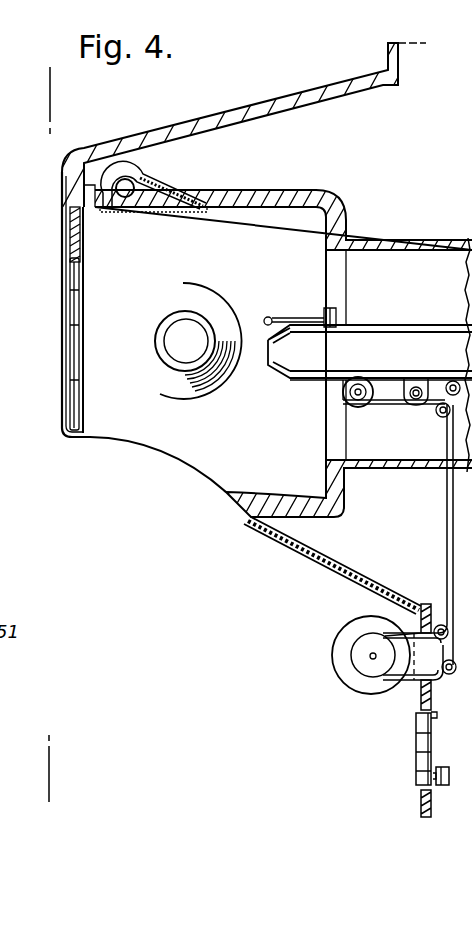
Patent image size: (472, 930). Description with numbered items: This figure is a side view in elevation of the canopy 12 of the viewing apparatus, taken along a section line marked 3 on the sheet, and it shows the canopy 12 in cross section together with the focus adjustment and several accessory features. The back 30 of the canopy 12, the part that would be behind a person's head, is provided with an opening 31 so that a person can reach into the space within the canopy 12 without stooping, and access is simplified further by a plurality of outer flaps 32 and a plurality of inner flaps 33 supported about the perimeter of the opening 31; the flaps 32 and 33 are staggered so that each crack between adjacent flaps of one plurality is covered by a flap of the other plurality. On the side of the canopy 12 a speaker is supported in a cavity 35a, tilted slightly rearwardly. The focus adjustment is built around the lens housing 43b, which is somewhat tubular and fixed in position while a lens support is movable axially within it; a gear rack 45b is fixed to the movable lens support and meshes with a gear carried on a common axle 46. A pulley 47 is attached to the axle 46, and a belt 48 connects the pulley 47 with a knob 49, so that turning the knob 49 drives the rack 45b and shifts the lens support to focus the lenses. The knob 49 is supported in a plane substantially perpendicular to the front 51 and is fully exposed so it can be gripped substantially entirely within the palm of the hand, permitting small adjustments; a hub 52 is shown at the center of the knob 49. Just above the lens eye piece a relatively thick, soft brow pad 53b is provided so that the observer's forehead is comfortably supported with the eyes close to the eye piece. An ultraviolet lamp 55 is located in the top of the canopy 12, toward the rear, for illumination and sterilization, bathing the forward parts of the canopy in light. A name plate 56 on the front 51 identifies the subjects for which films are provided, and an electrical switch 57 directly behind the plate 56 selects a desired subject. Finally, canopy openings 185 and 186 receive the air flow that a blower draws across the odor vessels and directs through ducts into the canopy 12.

The section line 3- 3 is at (43, 773).
The canopy 12 is at (126, 125).
The side wall assembly 30 is at (50, 231).
The opening 31 is at (56, 347).
The outer flaps 32 is at (70, 298).
The inner flaps 33 is at (100, 260).
The cavity 35a is at (175, 354).
The lens housing 43b is at (392, 335).
The gear rack 45b is at (398, 381).
The axle 46 is at (358, 402).
The pulley 47 is at (355, 400).
The belt 48 is at (442, 518).
The knob 49 is at (340, 641).
The front 51 is at (420, 701).
The pulley hub 52 is at (370, 659).
The brow pad 53b is at (268, 316).
The ultraviolet lamp 55 is at (142, 190).
The name plate 56 is at (417, 733).
The electrical switch 57 is at (446, 767).
The canopy opening 185 is at (402, 282).
The canopy opening 186 is at (362, 449).